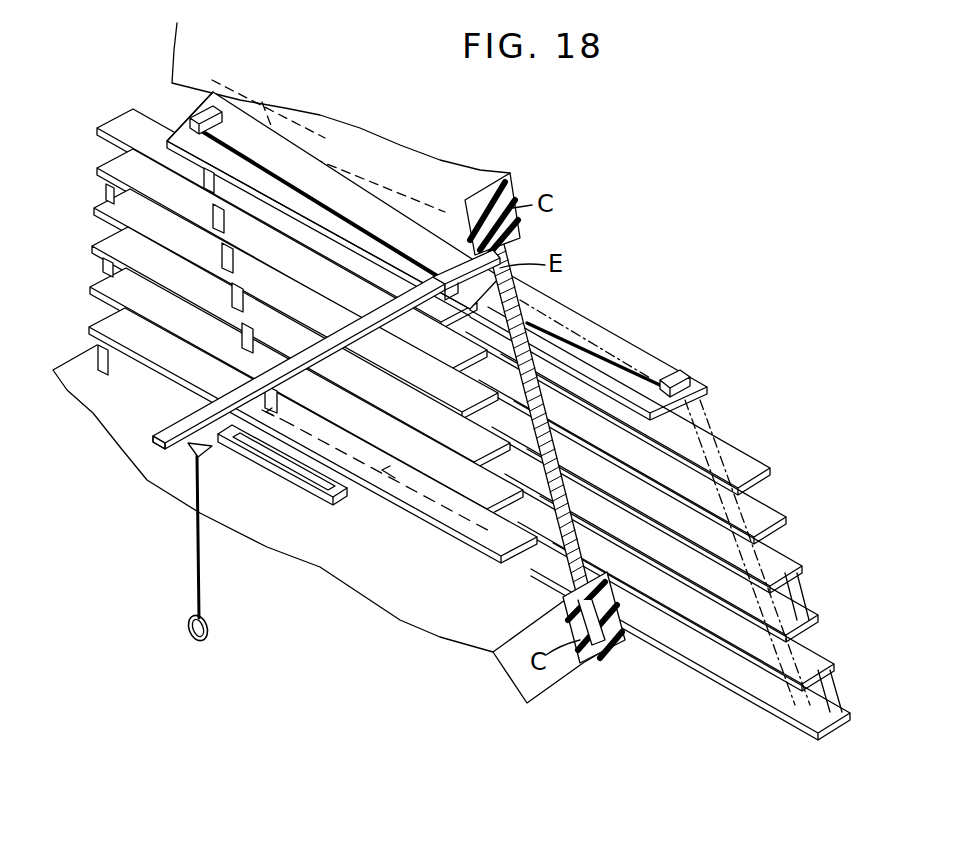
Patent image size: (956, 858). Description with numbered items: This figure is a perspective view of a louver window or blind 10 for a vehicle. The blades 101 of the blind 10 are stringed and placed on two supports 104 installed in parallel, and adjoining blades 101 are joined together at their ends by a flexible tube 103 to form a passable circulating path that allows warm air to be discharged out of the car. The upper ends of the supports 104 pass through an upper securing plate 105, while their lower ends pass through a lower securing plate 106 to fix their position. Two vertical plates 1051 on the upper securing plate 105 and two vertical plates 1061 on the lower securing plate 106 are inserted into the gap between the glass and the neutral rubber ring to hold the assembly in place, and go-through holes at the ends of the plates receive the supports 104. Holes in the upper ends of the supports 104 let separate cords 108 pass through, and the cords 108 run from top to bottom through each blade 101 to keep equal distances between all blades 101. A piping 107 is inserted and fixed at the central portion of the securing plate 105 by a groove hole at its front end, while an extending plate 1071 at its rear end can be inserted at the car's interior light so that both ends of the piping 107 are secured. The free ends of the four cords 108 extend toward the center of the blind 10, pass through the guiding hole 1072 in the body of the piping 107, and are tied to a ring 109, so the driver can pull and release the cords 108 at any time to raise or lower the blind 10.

The louver window or blind 10 is at (72, 234).
The blade 101 is at (120, 125).
The flexible tube 103 is at (100, 352).
The support 104 is at (190, 125).
The securing plate 105 is at (368, 215).
The vertical plate 1051 is at (305, 94).
The securing plate 106 is at (305, 464).
The vertical plate 1061 is at (397, 482).
The piping 107 is at (430, 275).
The extending plate 1071 is at (180, 443).
The guiding hole 1072 is at (205, 452).
The cord 108 is at (307, 167).
The ring 109 is at (210, 626).